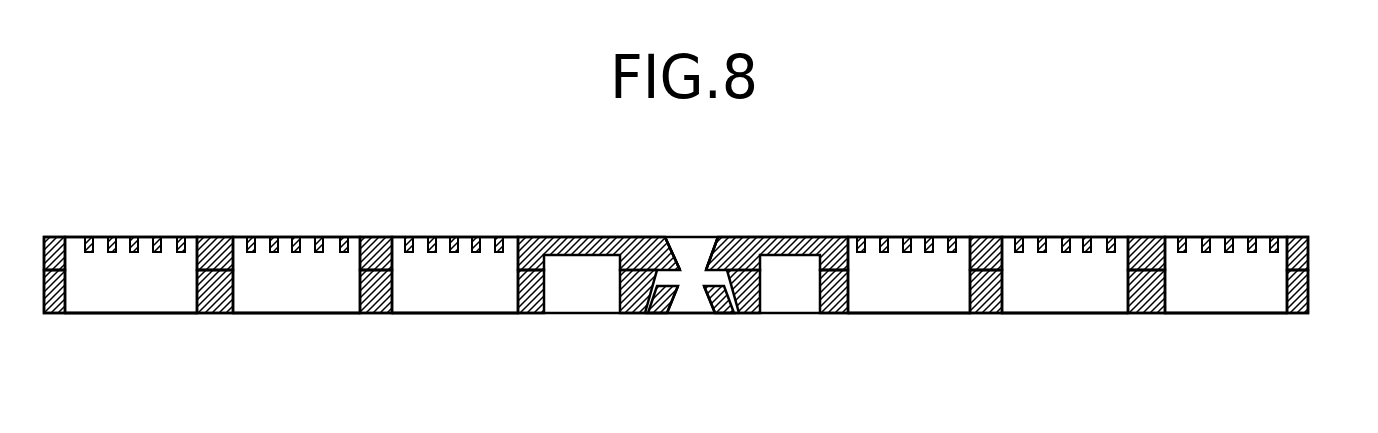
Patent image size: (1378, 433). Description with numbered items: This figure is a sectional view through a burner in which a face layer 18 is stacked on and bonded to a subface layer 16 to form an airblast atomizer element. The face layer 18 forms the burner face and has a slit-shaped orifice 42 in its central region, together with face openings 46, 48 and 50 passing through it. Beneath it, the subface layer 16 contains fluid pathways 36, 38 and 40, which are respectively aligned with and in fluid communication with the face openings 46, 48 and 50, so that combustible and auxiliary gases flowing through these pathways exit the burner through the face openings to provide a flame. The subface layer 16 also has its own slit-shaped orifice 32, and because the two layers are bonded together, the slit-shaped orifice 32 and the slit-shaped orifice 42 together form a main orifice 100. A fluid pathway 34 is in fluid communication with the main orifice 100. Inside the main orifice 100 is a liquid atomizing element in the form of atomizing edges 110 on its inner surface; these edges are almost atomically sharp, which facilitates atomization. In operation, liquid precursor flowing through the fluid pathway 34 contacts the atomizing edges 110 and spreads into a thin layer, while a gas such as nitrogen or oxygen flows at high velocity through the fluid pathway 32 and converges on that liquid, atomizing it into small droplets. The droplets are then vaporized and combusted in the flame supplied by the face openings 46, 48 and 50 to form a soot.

The subface layer 16 is at (1310, 300).
The face layer 18 is at (1310, 253).
The slit-shaped orifice 32 is at (693, 313).
The fluid pathway 34 is at (634, 313).
The fluid pathway 36 is at (456, 305).
The fluid pathway 38 is at (307, 305).
The fluid pathway 40 is at (170, 305).
The slit-shaped orifice 42 is at (716, 238).
The face opening 46 is at (511, 236).
The face opening 48 is at (353, 236).
The face opening 50 is at (77, 236).
The main orifice 100 is at (690, 263).
The atomizing edges 110 is at (682, 257).